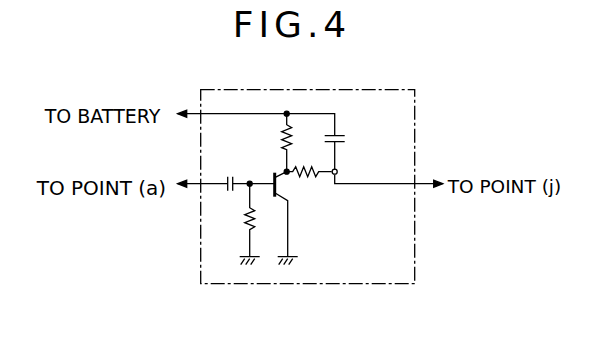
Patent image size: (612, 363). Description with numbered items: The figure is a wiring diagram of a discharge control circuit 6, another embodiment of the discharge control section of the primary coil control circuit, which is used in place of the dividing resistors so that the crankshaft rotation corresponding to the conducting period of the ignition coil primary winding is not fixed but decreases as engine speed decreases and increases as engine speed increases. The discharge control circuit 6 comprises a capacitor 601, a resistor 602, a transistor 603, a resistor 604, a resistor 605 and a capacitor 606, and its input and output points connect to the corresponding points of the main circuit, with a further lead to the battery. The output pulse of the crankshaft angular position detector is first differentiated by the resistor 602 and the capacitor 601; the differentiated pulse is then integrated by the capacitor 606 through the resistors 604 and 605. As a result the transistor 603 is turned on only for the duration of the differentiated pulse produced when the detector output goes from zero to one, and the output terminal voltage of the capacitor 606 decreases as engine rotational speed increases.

The discharge control circuit 6 is at (283, 285).
The capacitor 601 is at (233, 191).
The resistor 602 is at (250, 228).
The transistor 603 is at (282, 186).
The resistor 604 is at (283, 135).
The resistor 605 is at (308, 162).
The capacitor 606 is at (345, 141).